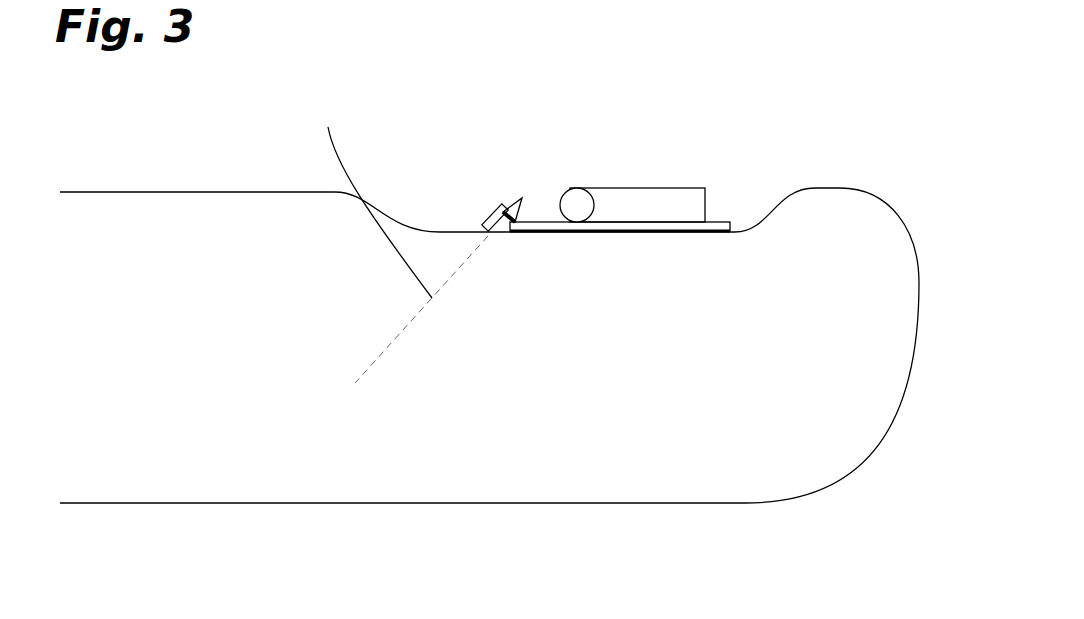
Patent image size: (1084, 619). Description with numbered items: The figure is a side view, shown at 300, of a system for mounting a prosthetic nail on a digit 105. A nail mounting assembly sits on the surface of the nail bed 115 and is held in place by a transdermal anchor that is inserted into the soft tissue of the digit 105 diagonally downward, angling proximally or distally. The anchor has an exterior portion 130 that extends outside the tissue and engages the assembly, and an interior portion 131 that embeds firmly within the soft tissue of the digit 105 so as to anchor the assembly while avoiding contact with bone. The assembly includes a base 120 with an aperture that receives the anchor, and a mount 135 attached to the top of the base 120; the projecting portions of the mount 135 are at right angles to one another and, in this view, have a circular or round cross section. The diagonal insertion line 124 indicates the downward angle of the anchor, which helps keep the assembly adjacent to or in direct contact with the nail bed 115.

The system for mounting a prosthetic nail 300 is at (845, 102).
The digit 105 is at (720, 472).
The nail bed 115 is at (778, 210).
The base 120 is at (492, 215).
The exterior portion 130 is at (490, 227).
The mount 135 is at (660, 205).
The interior portion 131 is at (370, 196).
The optical axis 124 is at (455, 292).